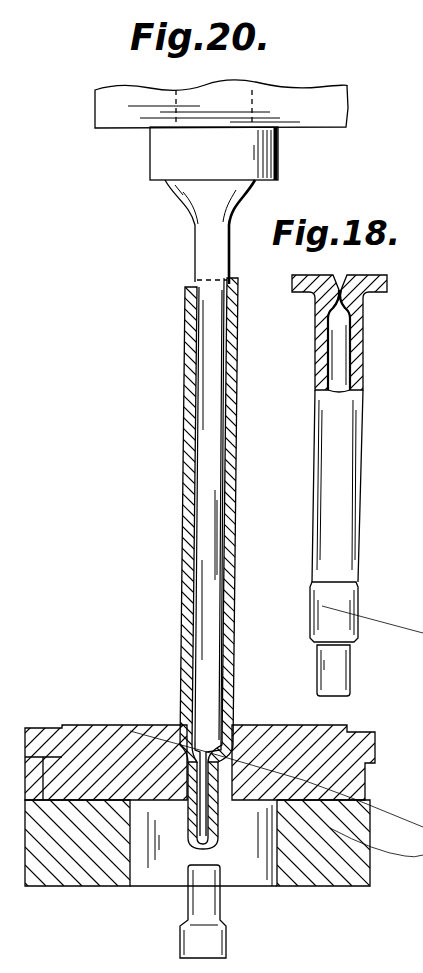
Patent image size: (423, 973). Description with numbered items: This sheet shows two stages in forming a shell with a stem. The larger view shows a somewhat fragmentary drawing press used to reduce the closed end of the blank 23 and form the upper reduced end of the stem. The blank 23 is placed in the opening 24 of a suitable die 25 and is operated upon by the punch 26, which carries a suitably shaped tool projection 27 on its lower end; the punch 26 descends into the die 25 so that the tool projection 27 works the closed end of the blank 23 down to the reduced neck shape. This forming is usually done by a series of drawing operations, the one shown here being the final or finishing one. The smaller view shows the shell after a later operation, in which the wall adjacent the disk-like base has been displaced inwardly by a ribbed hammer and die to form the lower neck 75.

In FIG. 20, the blank 23 is at (238, 394).
In FIG. 20, the opening 24 is at (262, 720).
In FIG. 20, the die 25 is at (122, 728).
In FIG. 20, the punch 26 is at (220, 277).
In FIG. 20, the tool projection 27 is at (217, 837).
In FIG. 18, the lower neck 75 is at (358, 296).